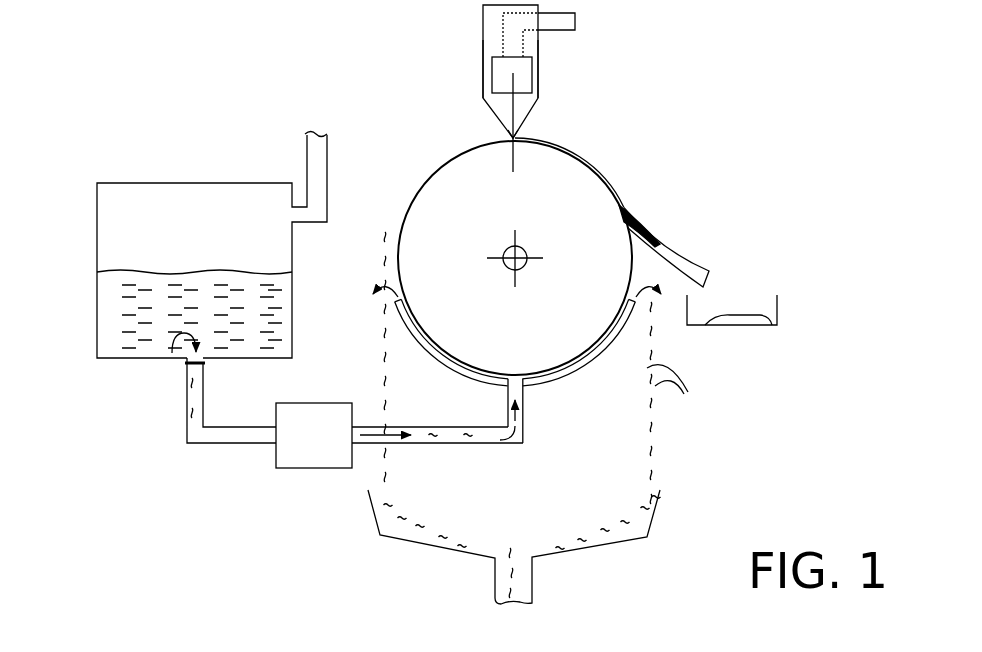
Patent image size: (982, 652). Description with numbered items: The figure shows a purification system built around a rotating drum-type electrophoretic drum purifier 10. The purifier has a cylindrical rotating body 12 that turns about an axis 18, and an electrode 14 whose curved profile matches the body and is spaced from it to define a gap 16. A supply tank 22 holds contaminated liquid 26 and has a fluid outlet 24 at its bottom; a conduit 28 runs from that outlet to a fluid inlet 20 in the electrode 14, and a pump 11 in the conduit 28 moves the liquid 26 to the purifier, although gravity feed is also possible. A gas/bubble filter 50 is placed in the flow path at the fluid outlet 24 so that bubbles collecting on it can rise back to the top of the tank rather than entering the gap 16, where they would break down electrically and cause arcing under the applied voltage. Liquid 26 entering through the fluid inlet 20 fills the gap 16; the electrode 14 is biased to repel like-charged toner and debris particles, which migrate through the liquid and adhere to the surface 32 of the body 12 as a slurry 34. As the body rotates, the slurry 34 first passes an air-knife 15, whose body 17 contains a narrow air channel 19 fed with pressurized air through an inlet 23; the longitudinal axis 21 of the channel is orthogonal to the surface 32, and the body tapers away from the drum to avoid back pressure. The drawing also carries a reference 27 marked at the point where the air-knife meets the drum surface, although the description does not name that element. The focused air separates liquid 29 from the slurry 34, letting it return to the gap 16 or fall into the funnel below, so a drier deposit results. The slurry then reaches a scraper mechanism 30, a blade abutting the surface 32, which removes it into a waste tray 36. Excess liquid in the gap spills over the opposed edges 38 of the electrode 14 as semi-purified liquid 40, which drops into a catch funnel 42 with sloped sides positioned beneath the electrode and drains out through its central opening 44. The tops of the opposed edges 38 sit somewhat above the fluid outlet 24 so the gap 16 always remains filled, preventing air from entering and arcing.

The drum purifier 10 is at (721, 137).
The pump 11 is at (313, 469).
The rotating body 12 is at (453, 168).
The electrode 14 is at (564, 381).
The air-knife 15 is at (460, 36).
The gap 16 is at (489, 368).
The body 17 is at (540, 50).
The axis 18 is at (527, 250).
The air channel 19 is at (517, 117).
The fluid inlet 20 is at (507, 392).
The longitudinal axis 21 is at (517, 78).
The supply tank 22 is at (97, 247).
The inlet 23 is at (577, 22).
The fluid outlet 24 is at (172, 352).
The liquid 26 is at (117, 330).
The needle tip contact point 27 is at (496, 135).
The conduit 28 is at (222, 444).
The liquid 29 is at (377, 236).
The scraper mechanism 30 is at (667, 248).
The surface 32 is at (633, 268).
The slurry 34 is at (593, 163).
The waste tray 36 is at (779, 305).
The opposed edges 38 is at (376, 300).
The semi-purified liquid 40 is at (677, 403).
The catch funnel 42 is at (658, 500).
The central opening 44 is at (521, 562).
The gas/bubble filter 50 is at (205, 374).